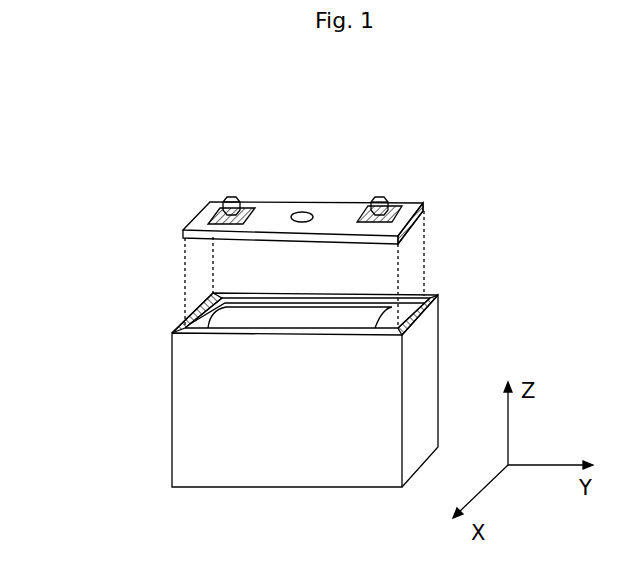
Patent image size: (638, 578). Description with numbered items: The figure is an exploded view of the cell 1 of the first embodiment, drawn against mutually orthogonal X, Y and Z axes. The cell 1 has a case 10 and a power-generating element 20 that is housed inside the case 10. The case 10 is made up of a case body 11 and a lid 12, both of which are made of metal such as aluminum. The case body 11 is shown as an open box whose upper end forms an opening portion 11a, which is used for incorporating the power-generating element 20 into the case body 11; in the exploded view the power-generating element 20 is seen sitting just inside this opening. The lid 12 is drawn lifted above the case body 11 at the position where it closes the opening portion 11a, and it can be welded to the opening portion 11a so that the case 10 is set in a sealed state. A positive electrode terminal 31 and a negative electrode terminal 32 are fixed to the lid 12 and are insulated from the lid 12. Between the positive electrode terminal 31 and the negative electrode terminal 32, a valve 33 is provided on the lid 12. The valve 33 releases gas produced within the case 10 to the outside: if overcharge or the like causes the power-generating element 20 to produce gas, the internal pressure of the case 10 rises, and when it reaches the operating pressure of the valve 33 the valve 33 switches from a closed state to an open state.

The cell 1 is at (143, 214).
The case 10 is at (265, 308).
The case body 11 is at (171, 400).
The opening portion 11a is at (189, 322).
The lid 12 is at (406, 202).
The power-generating element 20 is at (302, 318).
The positive electrode terminal 31 is at (231, 198).
The negative electrode terminal 32 is at (382, 198).
The valve 33 is at (303, 210).